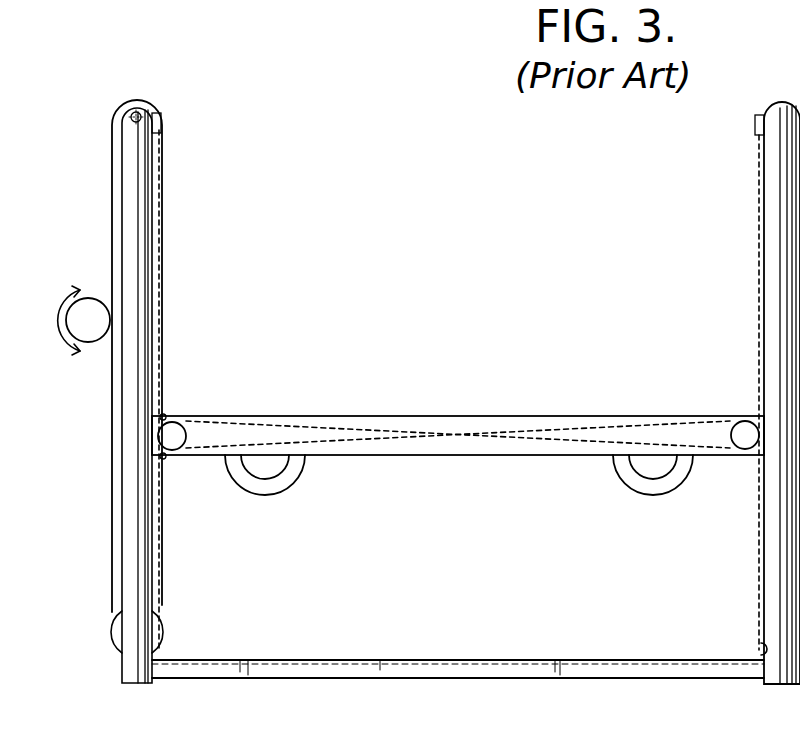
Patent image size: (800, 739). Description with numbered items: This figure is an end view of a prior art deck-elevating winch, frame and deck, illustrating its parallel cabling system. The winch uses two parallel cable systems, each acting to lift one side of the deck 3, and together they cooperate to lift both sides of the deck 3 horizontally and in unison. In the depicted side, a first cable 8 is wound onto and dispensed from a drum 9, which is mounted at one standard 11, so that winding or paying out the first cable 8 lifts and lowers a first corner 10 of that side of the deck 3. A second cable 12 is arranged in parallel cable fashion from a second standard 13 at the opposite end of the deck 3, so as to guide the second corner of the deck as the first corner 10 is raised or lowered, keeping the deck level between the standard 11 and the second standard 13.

The deck 3 is at (455, 417).
The first cable 8 is at (165, 229).
The drum 9 is at (92, 310).
The first corner 10 is at (165, 416).
The standard 11 is at (124, 182).
The second cable 12 is at (758, 303).
The second standard 13 is at (775, 208).